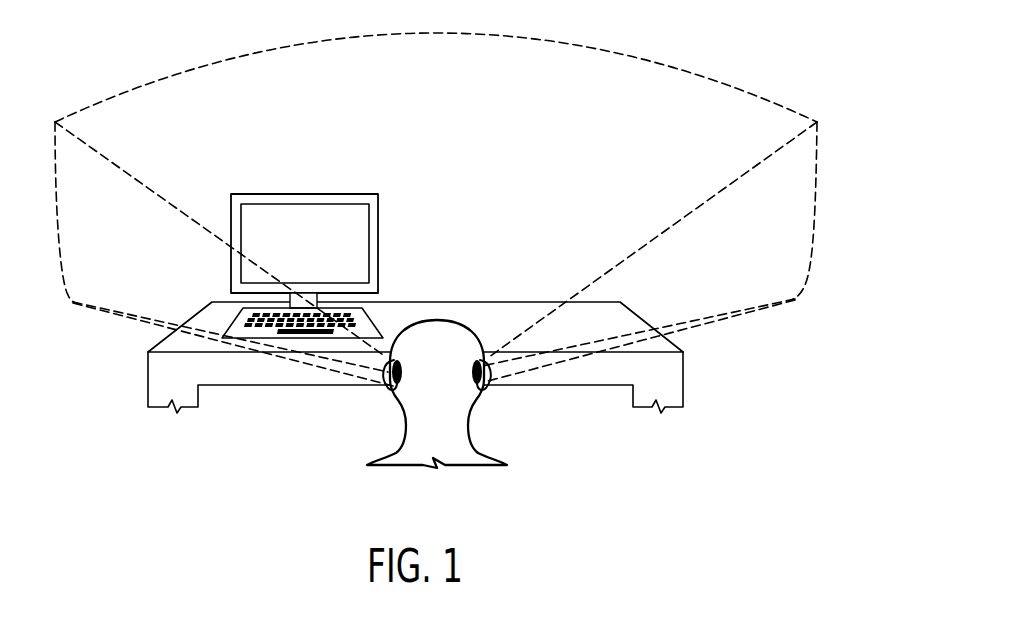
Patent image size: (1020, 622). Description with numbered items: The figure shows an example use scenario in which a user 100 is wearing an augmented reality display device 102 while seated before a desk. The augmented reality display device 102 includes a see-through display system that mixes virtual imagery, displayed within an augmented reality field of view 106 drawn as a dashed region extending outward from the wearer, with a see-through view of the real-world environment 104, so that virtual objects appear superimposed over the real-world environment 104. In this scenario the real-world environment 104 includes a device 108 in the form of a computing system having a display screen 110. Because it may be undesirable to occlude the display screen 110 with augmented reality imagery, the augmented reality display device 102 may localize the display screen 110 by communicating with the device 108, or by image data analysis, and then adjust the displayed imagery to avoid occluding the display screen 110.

The user 100 is at (450, 381).
The augmented reality display device 102 is at (485, 388).
The real-world environment 104 is at (696, 23).
The augmented reality field of view 106 is at (269, 48).
The device 108 is at (265, 193).
The display screen 110 is at (329, 203).